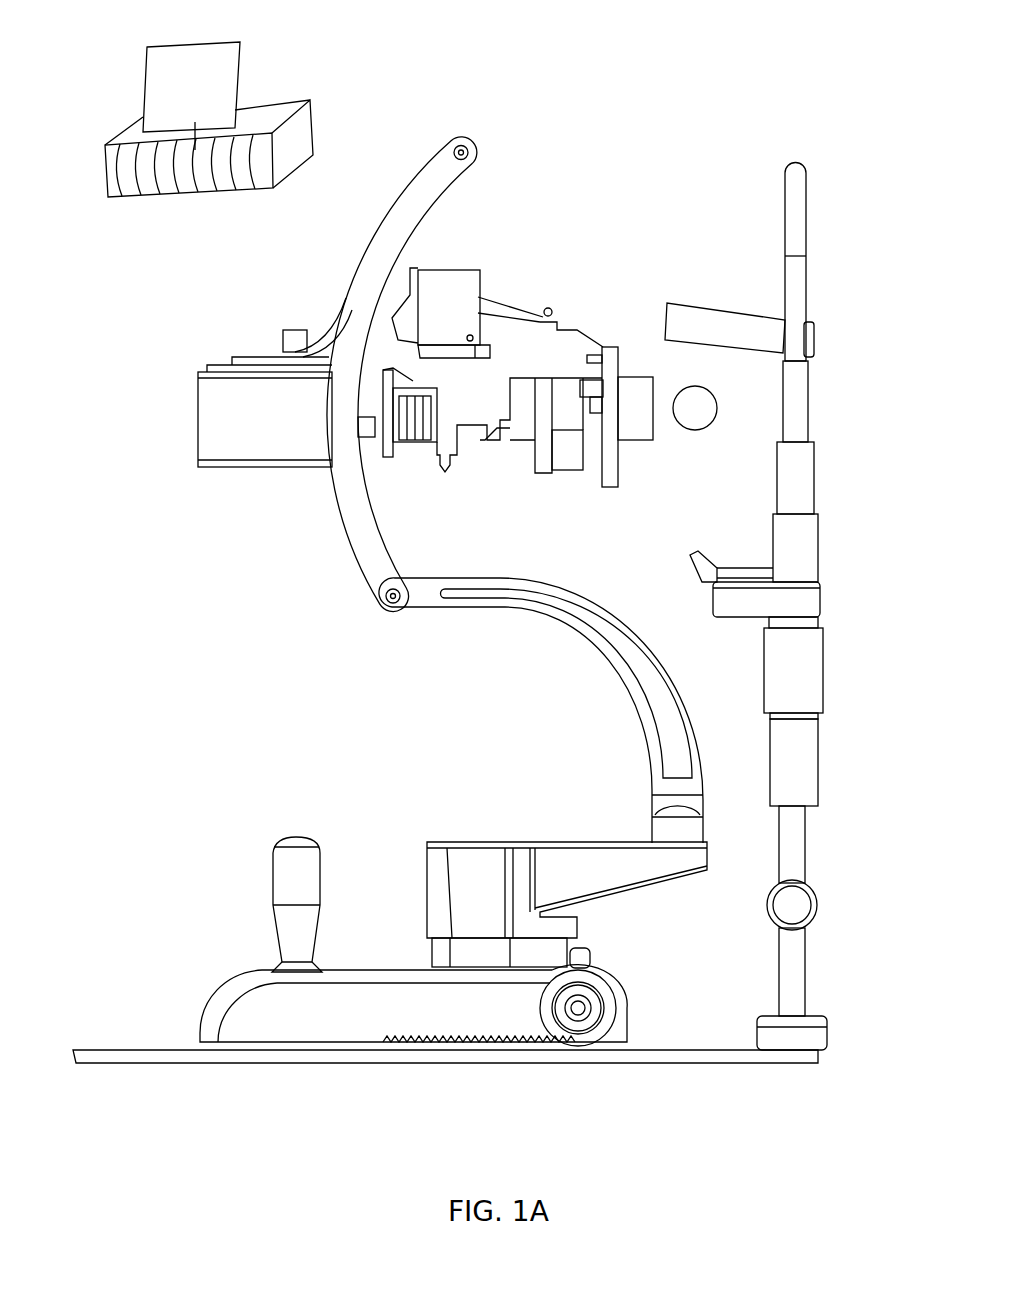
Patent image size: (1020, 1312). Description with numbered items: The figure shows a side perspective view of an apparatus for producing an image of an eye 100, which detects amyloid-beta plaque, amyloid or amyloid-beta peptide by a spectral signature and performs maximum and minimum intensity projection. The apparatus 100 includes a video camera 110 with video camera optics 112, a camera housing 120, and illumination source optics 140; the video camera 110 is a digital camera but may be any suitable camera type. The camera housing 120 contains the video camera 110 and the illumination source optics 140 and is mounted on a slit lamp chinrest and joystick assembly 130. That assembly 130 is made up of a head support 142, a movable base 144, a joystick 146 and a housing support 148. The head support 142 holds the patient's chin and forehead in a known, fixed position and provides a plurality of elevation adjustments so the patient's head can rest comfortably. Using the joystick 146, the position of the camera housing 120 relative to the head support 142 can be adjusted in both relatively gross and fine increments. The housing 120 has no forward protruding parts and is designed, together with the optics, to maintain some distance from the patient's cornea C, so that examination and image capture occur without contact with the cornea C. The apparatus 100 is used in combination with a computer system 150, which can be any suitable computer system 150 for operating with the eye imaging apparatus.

The apparatus for producing an image of an eye 100 is at (688, 458).
The video camera 110 is at (150, 355).
The video camera optics 112 is at (377, 472).
The camera housing 120 is at (358, 600).
The slit lamp chinrest and joystick assembly 130 is at (696, 1080).
The illumination source optics 140 is at (450, 292).
The head support 142 is at (803, 166).
The movable base 144 is at (335, 1010).
The joystick 146 is at (246, 877).
The housing support 148 is at (576, 675).
The computer system 150 is at (368, 104).
The cornea C is at (672, 392).